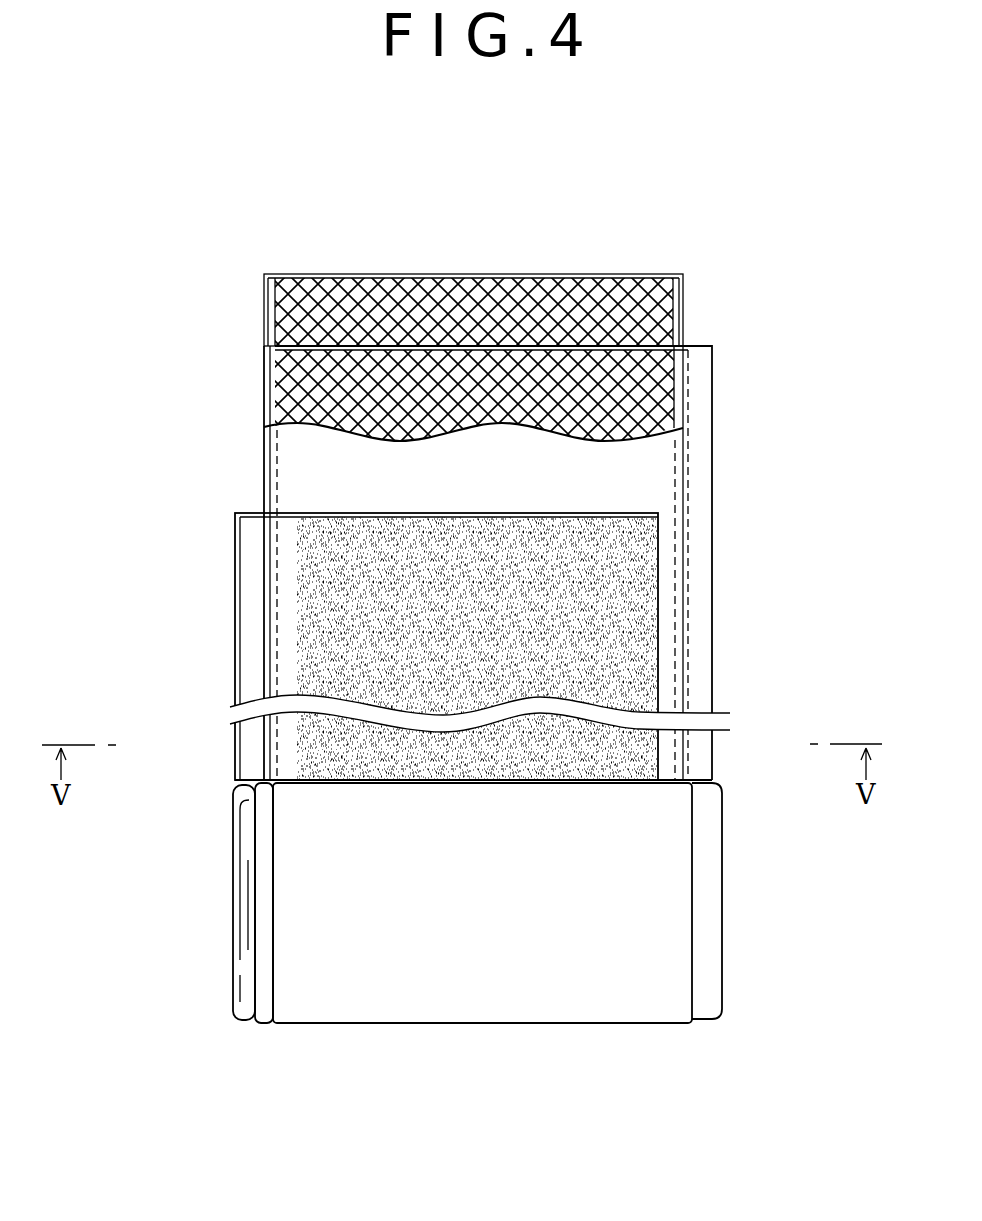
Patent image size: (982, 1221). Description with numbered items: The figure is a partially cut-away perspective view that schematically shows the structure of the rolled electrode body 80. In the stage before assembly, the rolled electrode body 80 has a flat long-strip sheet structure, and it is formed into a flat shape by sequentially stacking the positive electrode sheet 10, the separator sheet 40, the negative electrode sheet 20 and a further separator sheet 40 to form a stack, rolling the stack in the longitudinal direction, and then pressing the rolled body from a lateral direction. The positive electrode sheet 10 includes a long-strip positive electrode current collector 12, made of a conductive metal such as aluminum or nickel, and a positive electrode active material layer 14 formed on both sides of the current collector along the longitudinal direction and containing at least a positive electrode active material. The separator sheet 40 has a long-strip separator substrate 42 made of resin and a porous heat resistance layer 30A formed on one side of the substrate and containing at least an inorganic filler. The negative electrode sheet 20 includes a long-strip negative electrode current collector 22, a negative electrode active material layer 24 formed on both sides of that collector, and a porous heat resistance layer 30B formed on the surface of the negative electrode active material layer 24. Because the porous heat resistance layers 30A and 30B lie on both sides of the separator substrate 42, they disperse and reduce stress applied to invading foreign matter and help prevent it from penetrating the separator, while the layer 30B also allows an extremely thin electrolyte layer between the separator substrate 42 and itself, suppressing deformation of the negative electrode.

The positive electrode sheet 10 is at (220, 605).
The positive electrode current collector 12 is at (235, 686).
The positive electrode active material layer 14 is at (310, 537).
The negative electrode sheet 20 is at (726, 447).
The negative electrode current collector 22 is at (714, 570).
The negative electrode active material layer 24 is at (682, 382).
The porous heat resistance layer 30A is at (667, 300).
The porous heat resistance layer 30B is at (657, 368).
The separator sheet 40 is at (246, 330).
The separator substrate 42 is at (266, 380).
The rolled electrode body 80 is at (565, 1007).